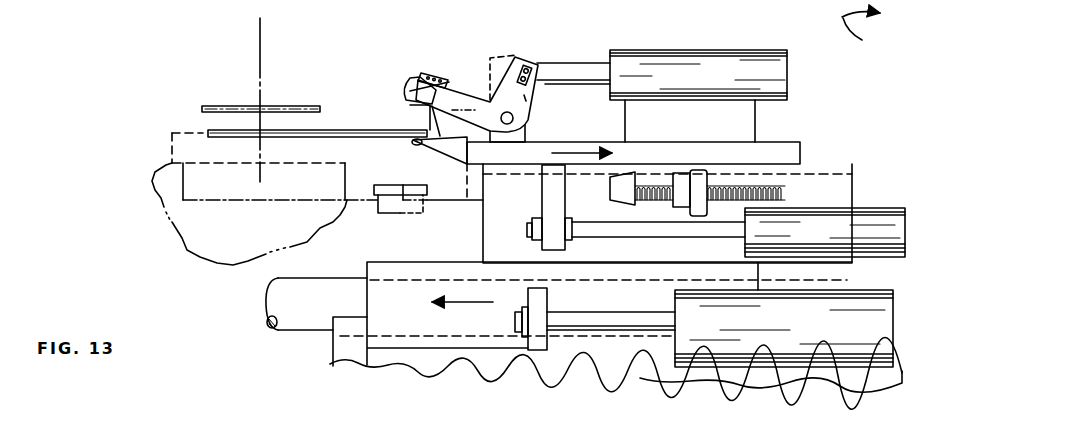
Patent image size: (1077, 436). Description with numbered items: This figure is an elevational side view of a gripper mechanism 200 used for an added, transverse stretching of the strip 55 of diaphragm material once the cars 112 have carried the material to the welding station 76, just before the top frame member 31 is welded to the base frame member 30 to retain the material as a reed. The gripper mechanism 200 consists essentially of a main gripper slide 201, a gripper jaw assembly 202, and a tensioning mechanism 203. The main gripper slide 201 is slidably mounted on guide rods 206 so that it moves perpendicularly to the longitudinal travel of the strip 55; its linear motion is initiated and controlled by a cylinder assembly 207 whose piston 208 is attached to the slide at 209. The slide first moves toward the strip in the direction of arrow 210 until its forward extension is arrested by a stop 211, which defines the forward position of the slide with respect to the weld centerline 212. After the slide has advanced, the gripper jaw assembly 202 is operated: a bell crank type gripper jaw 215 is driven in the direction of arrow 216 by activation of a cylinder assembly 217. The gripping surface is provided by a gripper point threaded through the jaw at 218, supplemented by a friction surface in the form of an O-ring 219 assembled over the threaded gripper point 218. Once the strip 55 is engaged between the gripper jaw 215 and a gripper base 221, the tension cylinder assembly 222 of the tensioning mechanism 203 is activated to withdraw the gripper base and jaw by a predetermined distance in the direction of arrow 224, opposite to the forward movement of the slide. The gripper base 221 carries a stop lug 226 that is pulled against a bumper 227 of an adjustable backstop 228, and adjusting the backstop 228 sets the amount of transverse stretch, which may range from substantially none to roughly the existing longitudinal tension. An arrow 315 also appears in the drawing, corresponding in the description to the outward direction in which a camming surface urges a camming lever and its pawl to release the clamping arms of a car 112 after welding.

The base frame member 30 is at (207, 162).
The top frame member 31 is at (283, 103).
The strip 55 is at (330, 128).
The welding station 76 is at (203, 66).
The car 112 is at (366, 205).
The gripper mechanism 200 is at (427, 59).
The main gripper slide 201 is at (367, 268).
The gripper jaw assembly 202 is at (416, 77).
The tensioning mechanism 203 is at (779, 146).
The guide rod 206 is at (306, 333).
The cylinder assembly 207 is at (730, 360).
The piston 208 is at (607, 313).
The attachment point 209 is at (525, 343).
The arrow 210 is at (458, 303).
The stop 211 is at (386, 366).
The weld centerline 212 is at (258, 39).
The gripper jaw 215 is at (536, 97).
The arrow 216 is at (448, 62).
The cylinder assembly 217 is at (685, 50).
The gripper point 218 is at (422, 96).
The O-ring 219 is at (410, 89).
The gripper base 221 is at (418, 143).
The tension cylinder assembly 222 is at (870, 208).
The arrow 224 is at (572, 150).
The stop lug 226 is at (545, 190).
The bumper 227 is at (610, 194).
The adjustable backstop 228 is at (645, 207).
The arrow 315 is at (867, 36).